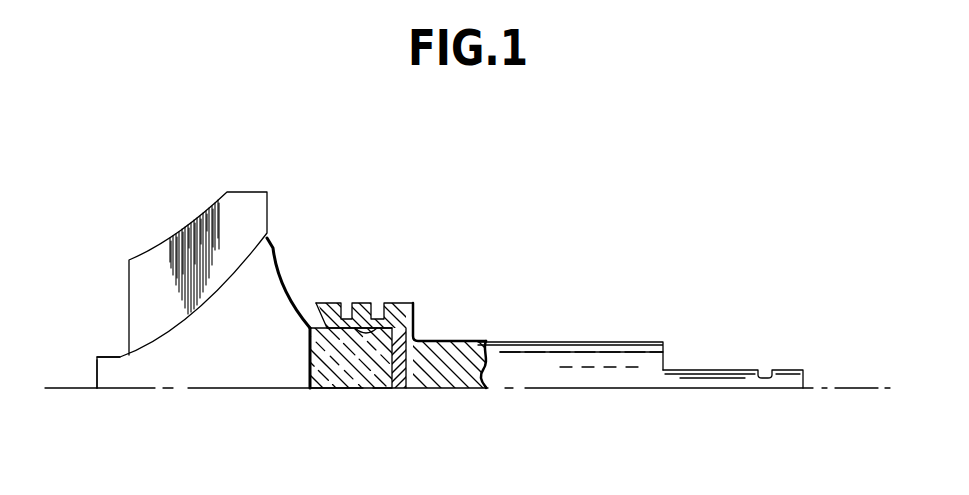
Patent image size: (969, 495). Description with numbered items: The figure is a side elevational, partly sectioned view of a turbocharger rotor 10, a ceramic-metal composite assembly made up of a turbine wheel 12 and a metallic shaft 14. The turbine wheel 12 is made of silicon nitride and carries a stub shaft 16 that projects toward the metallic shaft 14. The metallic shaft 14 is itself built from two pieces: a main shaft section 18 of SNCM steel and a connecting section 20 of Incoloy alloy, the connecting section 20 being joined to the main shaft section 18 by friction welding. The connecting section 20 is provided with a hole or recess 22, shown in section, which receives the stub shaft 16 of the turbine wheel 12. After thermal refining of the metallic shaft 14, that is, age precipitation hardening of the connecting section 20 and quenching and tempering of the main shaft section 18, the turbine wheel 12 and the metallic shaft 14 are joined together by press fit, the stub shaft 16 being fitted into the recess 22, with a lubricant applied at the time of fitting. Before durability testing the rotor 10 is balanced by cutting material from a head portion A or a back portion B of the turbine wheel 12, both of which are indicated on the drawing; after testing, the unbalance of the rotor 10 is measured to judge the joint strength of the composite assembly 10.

The turbocharger rotor 10 is at (457, 260).
The turbine wheel 12 is at (266, 372).
The metallic shaft 14 is at (538, 333).
The stub shaft 16 is at (350, 372).
The main shaft section 18 is at (567, 373).
The connecting section 20 is at (397, 313).
The recess 22 is at (378, 314).
The head portion A is at (99, 336).
The back portion B is at (284, 254).